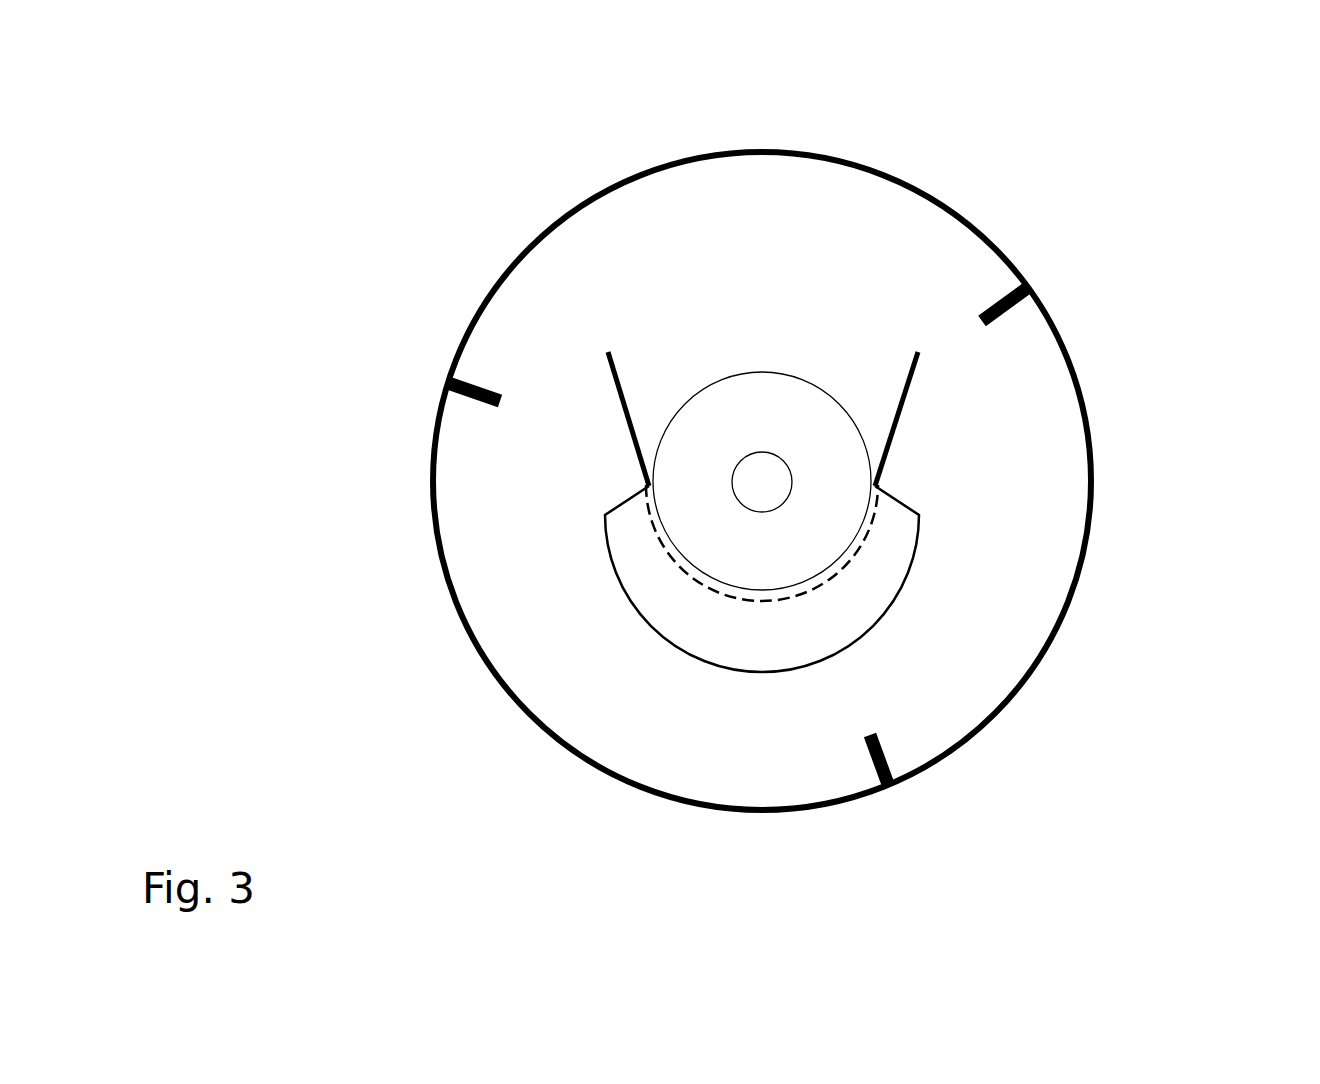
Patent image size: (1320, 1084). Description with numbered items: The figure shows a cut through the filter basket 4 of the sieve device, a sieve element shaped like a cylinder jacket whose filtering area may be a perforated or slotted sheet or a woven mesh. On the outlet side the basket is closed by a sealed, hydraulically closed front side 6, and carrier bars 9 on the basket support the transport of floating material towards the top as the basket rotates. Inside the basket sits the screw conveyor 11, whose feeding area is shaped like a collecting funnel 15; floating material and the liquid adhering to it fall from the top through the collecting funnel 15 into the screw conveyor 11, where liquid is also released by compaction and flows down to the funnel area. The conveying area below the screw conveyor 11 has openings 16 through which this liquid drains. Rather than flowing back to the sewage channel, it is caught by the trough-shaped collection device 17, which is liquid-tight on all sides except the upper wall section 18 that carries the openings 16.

The filter basket 4 is at (762, 449).
The carrier bars 9 is at (739, 524).
The hydraulically closed front side 6 is at (544, 532).
The collecting funnel 15 is at (763, 370).
The screw conveyor 11 is at (762, 422).
The upper wall section 18 is at (681, 561).
The openings 16 is at (762, 617).
The collection device 17 is at (935, 579).